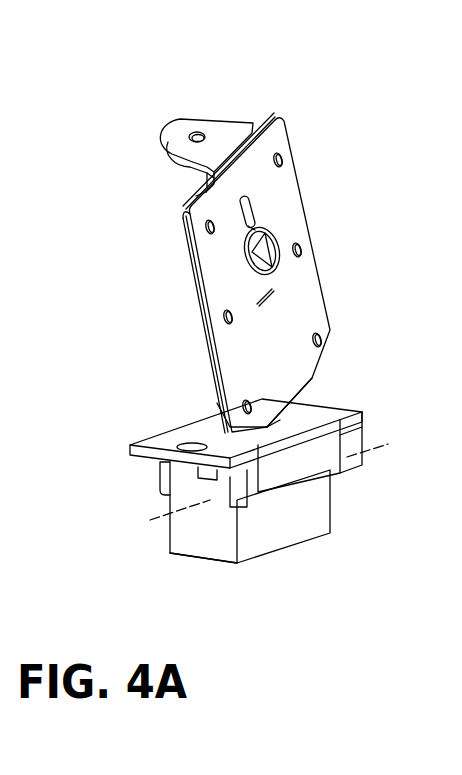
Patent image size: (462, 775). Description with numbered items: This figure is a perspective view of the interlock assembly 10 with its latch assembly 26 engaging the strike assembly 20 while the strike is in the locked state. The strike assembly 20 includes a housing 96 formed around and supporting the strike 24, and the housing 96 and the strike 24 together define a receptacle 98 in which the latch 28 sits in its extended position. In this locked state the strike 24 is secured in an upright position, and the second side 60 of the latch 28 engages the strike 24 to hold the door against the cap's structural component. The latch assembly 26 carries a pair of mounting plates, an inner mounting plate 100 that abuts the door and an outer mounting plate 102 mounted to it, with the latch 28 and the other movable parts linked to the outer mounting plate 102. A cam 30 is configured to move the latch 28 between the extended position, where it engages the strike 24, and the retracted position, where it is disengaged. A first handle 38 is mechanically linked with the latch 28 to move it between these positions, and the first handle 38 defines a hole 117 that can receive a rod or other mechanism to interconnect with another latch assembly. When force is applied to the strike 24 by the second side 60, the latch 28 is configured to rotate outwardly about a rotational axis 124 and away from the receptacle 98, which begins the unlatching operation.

The interlock assembly 10 is at (158, 333).
The strike assembly 20 is at (251, 487).
The strike 24 is at (273, 453).
The latch assembly 26 is at (302, 143).
The latch 28 is at (300, 398).
The cam 30 is at (276, 233).
The first handle 38 is at (168, 136).
The second side 60 is at (337, 420).
The housing 96 is at (193, 558).
The receptacle 98 is at (220, 440).
The inner mounting plate 100 is at (293, 297).
The outer mounting plate 102 is at (197, 194).
The hole 117 is at (198, 134).
The rotational axis 124 is at (152, 520).